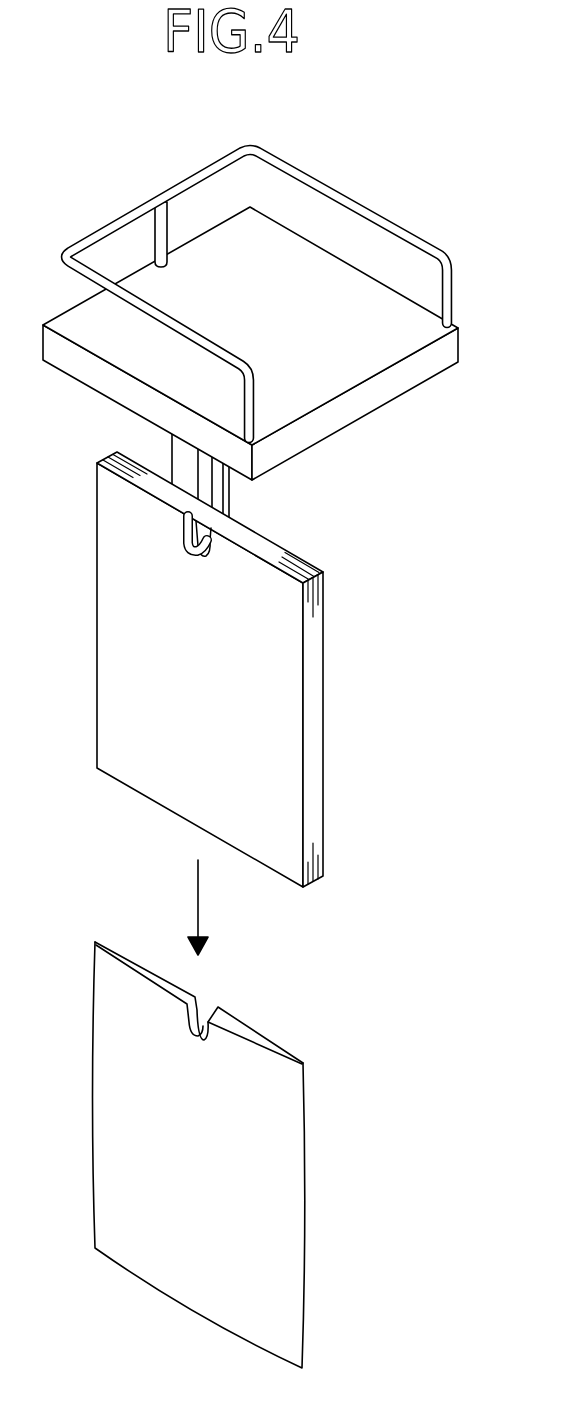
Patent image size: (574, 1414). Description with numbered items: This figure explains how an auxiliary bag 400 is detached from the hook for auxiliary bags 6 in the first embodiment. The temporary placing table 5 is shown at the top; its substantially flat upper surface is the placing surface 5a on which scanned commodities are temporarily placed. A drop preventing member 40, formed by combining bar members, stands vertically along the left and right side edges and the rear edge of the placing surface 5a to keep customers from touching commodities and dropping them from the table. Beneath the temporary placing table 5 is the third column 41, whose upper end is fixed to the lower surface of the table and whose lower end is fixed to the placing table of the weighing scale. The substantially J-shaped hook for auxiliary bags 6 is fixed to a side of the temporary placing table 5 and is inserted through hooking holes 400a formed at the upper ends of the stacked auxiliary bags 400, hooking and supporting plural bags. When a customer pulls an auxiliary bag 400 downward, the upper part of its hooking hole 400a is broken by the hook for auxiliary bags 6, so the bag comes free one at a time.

The drop preventing member 40 is at (297, 163).
The placing surface 5a is at (308, 292).
The third column 41 is at (170, 450).
The temporary placing table 5 is at (250, 314).
The hooking hole 400a is at (205, 556).
The hook for auxiliary bags 6 is at (182, 542).
The auxiliary bag 400 is at (262, 910).